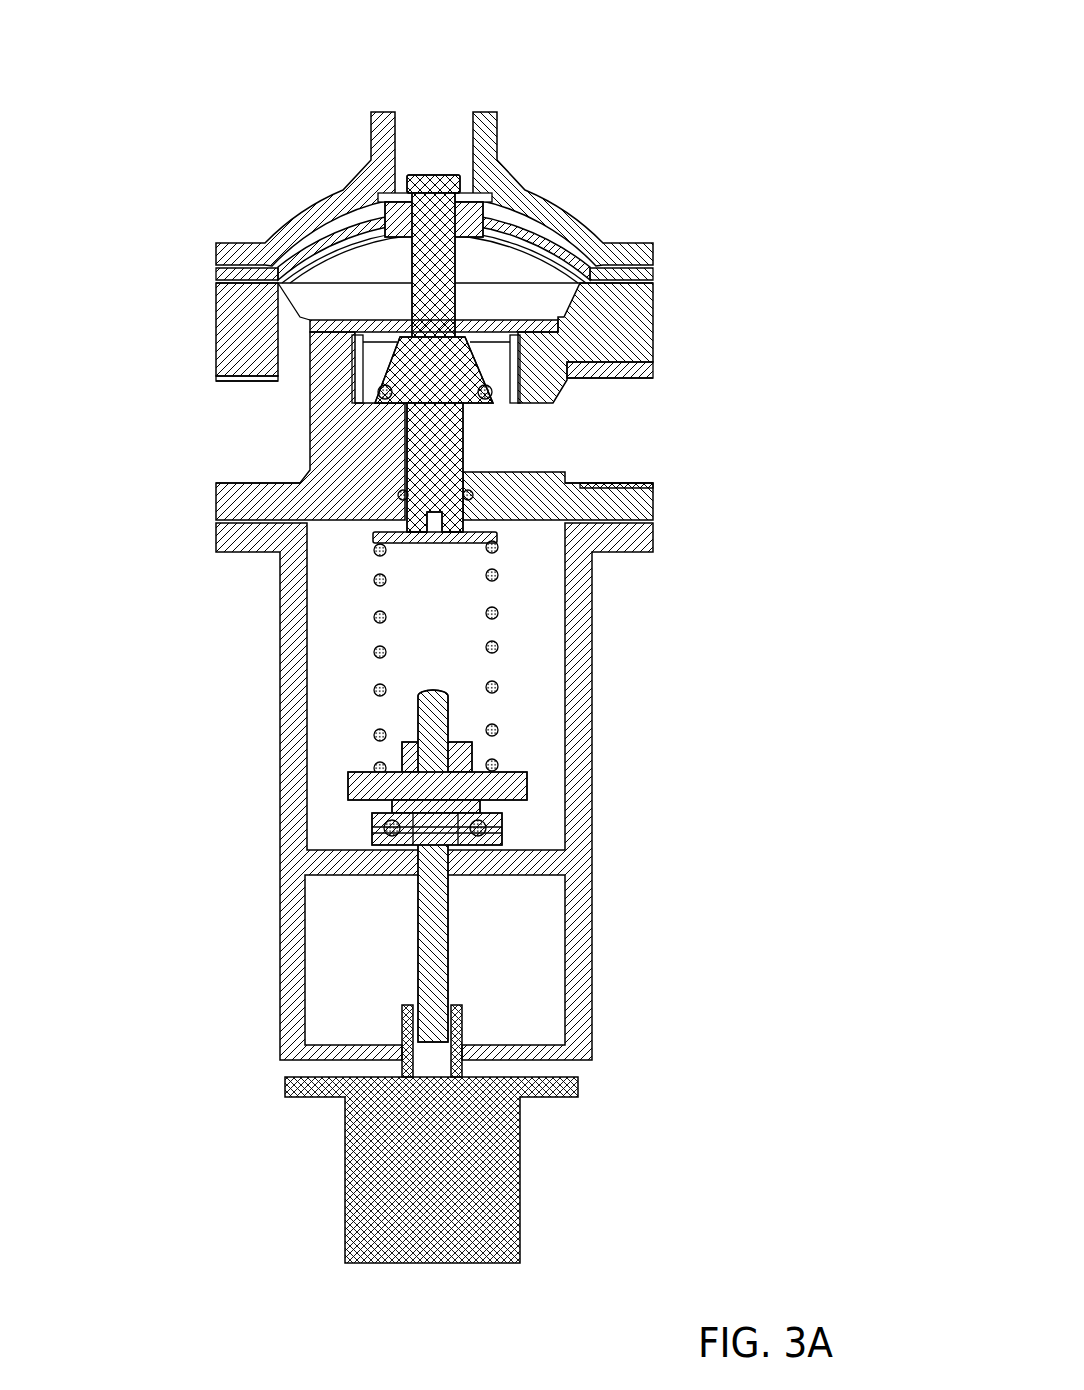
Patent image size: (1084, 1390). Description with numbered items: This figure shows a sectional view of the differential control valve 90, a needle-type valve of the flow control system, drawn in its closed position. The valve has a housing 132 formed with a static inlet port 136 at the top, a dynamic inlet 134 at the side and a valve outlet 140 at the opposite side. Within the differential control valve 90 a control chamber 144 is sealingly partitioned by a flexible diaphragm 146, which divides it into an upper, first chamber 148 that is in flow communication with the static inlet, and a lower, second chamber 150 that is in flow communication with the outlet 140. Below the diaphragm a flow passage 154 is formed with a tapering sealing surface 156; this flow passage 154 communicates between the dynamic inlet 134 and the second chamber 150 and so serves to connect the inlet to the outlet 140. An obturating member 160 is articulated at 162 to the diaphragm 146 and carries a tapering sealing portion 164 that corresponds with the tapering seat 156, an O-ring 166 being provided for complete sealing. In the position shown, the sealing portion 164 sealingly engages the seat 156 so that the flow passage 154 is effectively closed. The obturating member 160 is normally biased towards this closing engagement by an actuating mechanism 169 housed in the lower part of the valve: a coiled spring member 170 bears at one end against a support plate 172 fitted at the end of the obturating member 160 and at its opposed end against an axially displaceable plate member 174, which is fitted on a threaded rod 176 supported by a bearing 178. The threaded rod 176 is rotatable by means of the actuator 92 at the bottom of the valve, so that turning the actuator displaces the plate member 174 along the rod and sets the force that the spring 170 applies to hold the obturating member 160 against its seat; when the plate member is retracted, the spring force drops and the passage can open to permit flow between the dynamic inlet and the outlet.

The differential control valve 90 is at (735, 223).
The actuator 92 is at (477, 1173).
The housing 132 is at (653, 310).
The dynamic inlet 134 is at (637, 428).
The static inlet port 136 is at (455, 135).
The valve outlet 140 is at (253, 455).
The control chamber 144 is at (497, 212).
The flexible diaphragm 146 is at (318, 307).
The first chamber 148 is at (373, 207).
The second chamber 150 is at (272, 265).
The flow passage 154 is at (465, 325).
The sealing surface 156 is at (373, 355).
The obturating member 160 is at (262, 552).
The articulation 162 is at (413, 190).
The tapering sealing portion 164 is at (643, 358).
The O-ring 166 is at (380, 400).
The actuating mechanism 169 is at (345, 762).
The coiled spring member 170 is at (498, 688).
The support plate 172 is at (497, 535).
The plate member 174 is at (527, 788).
The threaded rod 176 is at (450, 958).
The bearing 178 is at (502, 822).